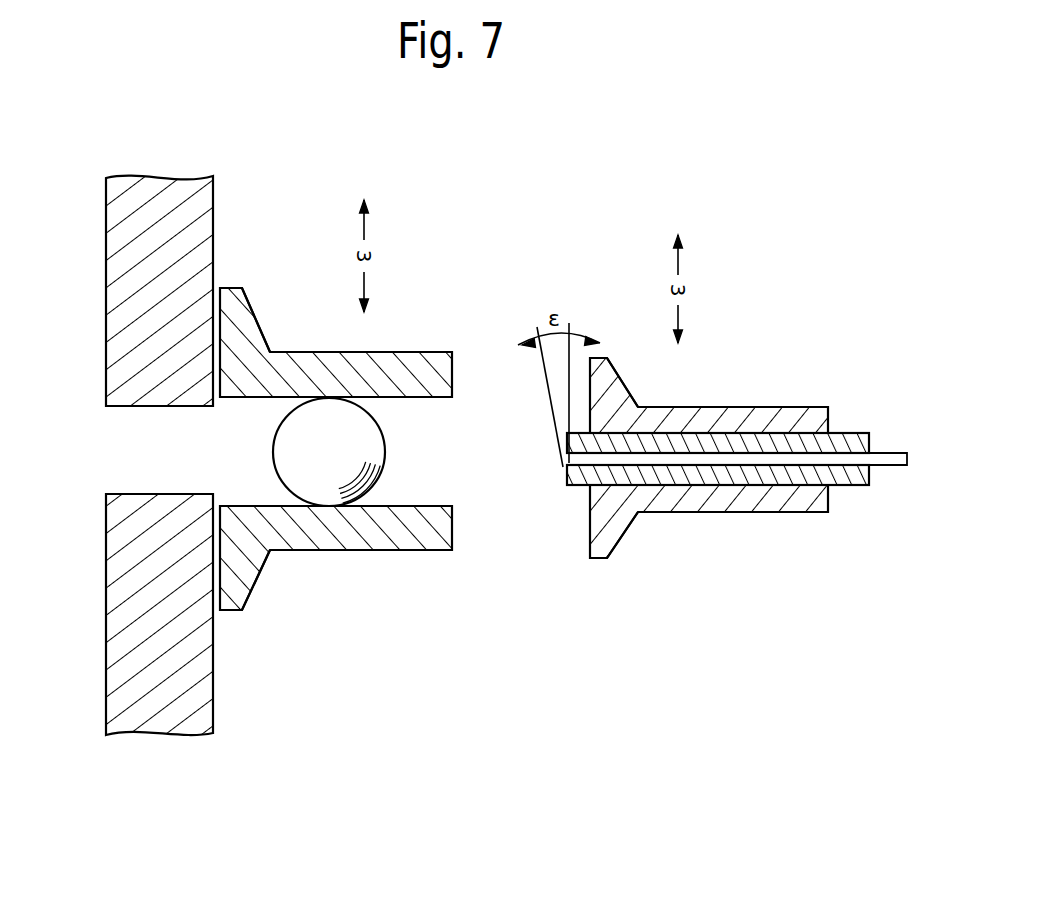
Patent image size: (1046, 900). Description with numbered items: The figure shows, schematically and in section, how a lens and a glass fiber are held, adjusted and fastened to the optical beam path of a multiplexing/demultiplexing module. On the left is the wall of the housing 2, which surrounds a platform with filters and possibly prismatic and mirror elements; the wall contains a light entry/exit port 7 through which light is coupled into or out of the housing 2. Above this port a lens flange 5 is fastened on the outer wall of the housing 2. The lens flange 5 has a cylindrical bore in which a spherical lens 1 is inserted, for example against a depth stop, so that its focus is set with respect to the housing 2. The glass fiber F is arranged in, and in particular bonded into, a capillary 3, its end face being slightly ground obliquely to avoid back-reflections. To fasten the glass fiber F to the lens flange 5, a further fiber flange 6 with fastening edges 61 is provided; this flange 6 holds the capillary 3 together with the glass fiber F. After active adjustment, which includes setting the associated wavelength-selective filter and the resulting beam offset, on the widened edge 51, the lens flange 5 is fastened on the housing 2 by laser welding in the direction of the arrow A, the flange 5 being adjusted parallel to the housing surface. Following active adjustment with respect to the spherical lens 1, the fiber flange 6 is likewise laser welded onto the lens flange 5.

The spherical lens 1 is at (327, 477).
The housing 2 is at (210, 732).
The capillary 3 is at (727, 411).
The lens flange 5 is at (336, 441).
The widened edge 51 is at (255, 387).
The fiber flange 6 is at (709, 472).
The fastening edges 61 is at (612, 538).
The light entry/exit port 7 is at (120, 427).
The arrow A is at (273, 601).
The glass fiber F is at (890, 465).